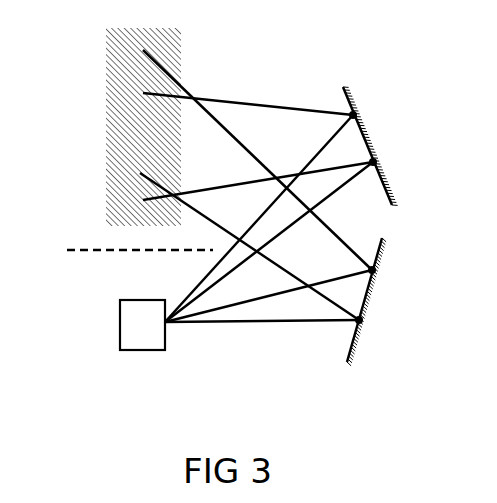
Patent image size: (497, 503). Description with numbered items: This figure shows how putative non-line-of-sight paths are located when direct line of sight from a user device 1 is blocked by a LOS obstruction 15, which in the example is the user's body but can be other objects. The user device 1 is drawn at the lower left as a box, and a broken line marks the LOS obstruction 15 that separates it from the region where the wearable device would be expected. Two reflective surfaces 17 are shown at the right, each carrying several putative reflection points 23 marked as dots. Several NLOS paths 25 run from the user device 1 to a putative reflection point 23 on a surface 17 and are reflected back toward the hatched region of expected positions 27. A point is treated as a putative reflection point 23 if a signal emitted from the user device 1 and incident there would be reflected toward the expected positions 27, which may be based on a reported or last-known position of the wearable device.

The user device 1 is at (112, 348).
The LOS obstruction 15 is at (103, 262).
The surface 17 is at (352, 88).
The putative reflection point 23 is at (356, 117).
The NLOS path 25 is at (251, 92).
The expected positions 27 is at (103, 173).